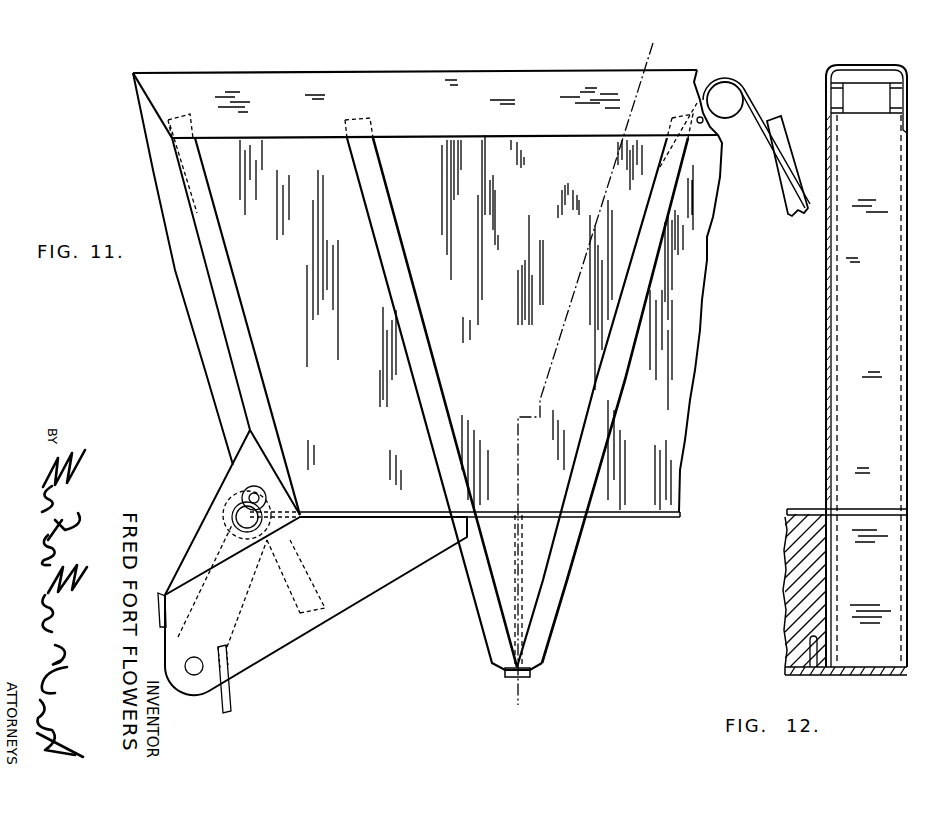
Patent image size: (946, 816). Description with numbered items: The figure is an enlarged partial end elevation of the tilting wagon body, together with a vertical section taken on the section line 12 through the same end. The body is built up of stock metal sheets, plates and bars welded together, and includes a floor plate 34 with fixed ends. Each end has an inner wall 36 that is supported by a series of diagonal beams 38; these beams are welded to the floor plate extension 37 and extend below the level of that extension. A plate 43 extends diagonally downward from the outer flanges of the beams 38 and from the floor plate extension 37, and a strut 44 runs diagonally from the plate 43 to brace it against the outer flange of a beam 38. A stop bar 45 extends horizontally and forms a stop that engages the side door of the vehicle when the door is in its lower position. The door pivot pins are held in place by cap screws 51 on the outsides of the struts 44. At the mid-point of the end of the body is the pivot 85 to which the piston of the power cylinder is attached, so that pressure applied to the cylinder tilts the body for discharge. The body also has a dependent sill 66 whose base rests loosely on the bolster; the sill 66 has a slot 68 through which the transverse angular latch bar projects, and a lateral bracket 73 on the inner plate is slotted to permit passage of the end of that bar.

In FIG. 11, the section line 12 is at (680, 50).
In FIG. 12, the floor plate 34 is at (800, 507).
In FIG. 11, the inner wall 36 is at (248, 313).
In FIG. 12, the inner wall 36 is at (826, 307).
In FIG. 11, the floor plate extension 37 is at (347, 512).
In FIG. 12, the floor plate extension 37 is at (885, 508).
In FIG. 11, the diagonal beam 38 is at (437, 390).
In FIG. 12, the diagonal beam 38 is at (845, 360).
In FIG. 11, the plate 43 is at (352, 588).
In FIG. 11, the strut 44 is at (220, 544).
In FIG. 11, the stop bar 45 is at (158, 592).
In FIG. 11, the cap screw 51 is at (247, 497).
In FIG. 11, the dependent sill 66 is at (525, 603).
In FIG. 12, the dependent sill 66 is at (797, 566).
In FIG. 12, the slot 68 is at (806, 655).
In FIG. 11, the lateral bracket 73 is at (232, 693).
In FIG. 11, the pivot 85 is at (730, 93).